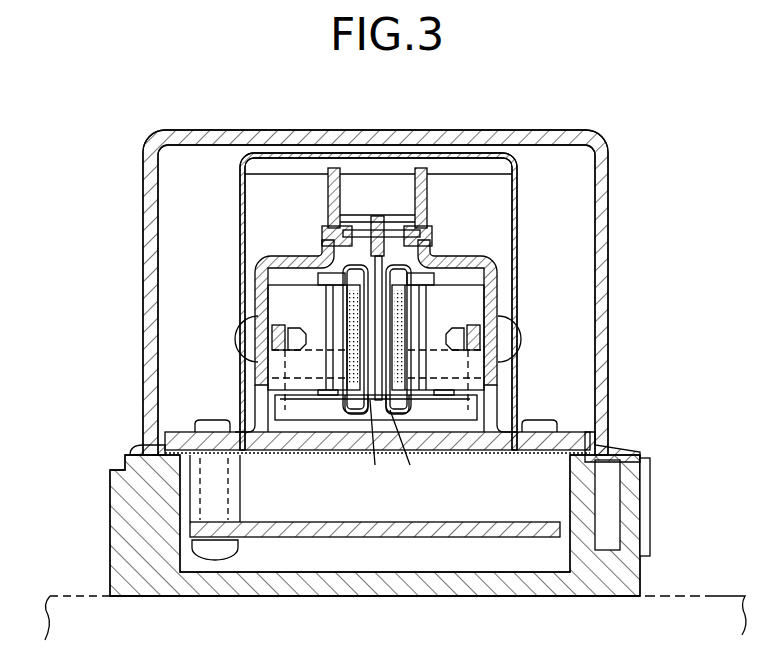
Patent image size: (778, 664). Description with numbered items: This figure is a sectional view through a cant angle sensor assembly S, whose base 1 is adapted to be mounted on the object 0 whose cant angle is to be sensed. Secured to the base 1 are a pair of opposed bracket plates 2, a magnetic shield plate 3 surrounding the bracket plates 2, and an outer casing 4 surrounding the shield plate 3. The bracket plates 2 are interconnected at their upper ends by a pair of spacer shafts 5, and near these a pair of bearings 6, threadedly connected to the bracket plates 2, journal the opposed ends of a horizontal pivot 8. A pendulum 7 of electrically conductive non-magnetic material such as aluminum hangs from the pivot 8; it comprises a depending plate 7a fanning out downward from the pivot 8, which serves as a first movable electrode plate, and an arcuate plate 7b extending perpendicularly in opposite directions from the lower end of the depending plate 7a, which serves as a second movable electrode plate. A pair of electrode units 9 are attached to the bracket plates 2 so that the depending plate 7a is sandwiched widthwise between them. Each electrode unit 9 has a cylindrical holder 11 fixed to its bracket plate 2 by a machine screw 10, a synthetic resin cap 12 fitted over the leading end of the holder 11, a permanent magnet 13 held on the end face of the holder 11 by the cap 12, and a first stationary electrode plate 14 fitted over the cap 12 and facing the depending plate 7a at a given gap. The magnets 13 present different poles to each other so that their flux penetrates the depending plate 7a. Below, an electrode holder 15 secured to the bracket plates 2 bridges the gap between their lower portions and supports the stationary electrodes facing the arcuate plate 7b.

The cant angle sensor assembly S is at (610, 133).
The object 0 is at (57, 593).
The base 1 is at (347, 597).
The bracket plates 2 is at (275, 262).
The magnetic shield plate 3 is at (515, 232).
The outer casing 4 is at (608, 262).
The spacer shafts 5 is at (404, 208).
The bearings 6 is at (340, 238).
The pendulum 7 is at (300, 420).
The depending plate 7a is at (382, 302).
The arcuate plate 7b is at (413, 452).
The horizontal pivot 8 is at (362, 230).
The electrode units 9 is at (266, 305).
The machine screw 10 is at (246, 338).
The cylindrical holder 11 is at (320, 316).
The cap 12 is at (325, 395).
The permanent magnet 13 is at (352, 372).
The first stationary electrode plate 14 is at (381, 447).
The electrode holder 15 is at (350, 455).